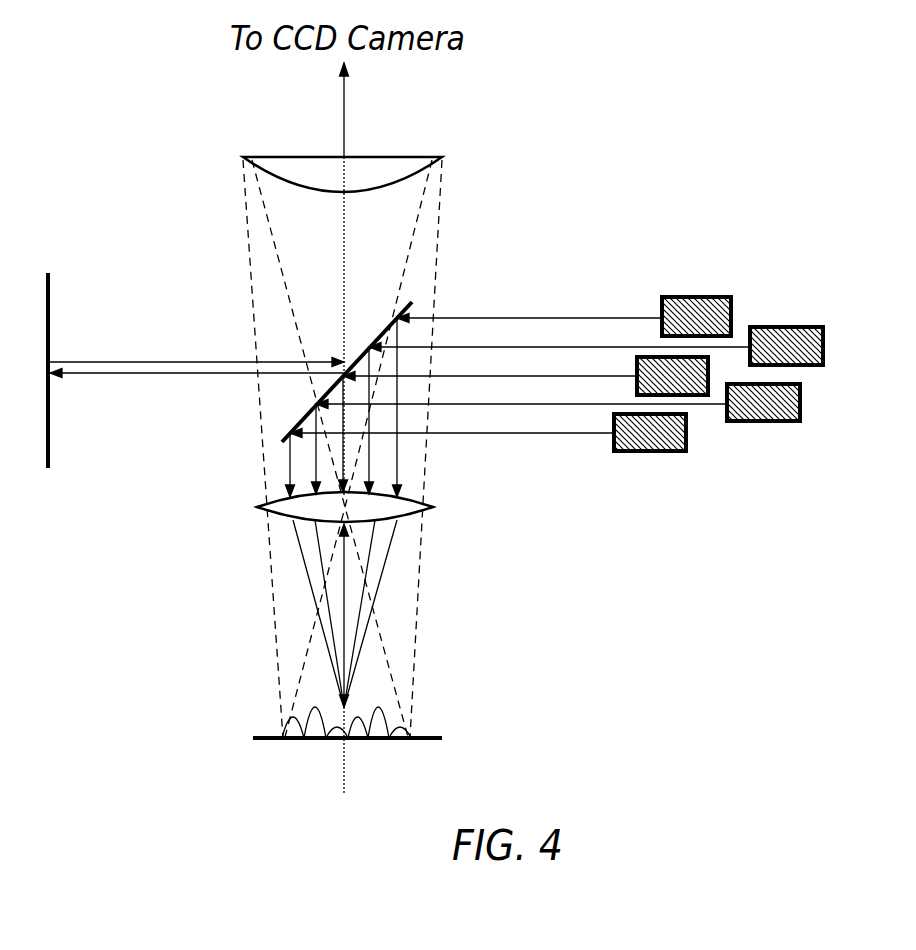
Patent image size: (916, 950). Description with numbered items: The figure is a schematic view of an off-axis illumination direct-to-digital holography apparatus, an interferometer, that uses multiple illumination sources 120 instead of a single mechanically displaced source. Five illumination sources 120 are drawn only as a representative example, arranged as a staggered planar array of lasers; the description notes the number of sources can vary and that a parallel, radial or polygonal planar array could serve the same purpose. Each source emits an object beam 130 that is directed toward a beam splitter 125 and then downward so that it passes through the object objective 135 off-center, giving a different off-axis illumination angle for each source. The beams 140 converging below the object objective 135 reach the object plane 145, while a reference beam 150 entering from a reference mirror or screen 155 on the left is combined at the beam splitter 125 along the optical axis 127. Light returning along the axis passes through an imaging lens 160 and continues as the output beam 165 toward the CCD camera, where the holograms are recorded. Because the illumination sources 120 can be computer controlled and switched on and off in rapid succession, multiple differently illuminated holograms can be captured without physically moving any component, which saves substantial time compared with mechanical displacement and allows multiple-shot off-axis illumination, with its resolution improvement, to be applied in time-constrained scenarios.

The illumination sources 120 is at (754, 370).
The beam splitter 125 is at (391, 346).
The optical axis 127 is at (420, 476).
The object beam 130 is at (518, 414).
The object objective 135 is at (386, 522).
The converging beams 140 is at (392, 613).
The sample surface with interference fringes 145 is at (328, 749).
The reference beam 150 is at (196, 348).
The screen 155 is at (107, 376).
The imaging lens 160 is at (311, 200).
The output beam to CCD camera 165 is at (378, 110).